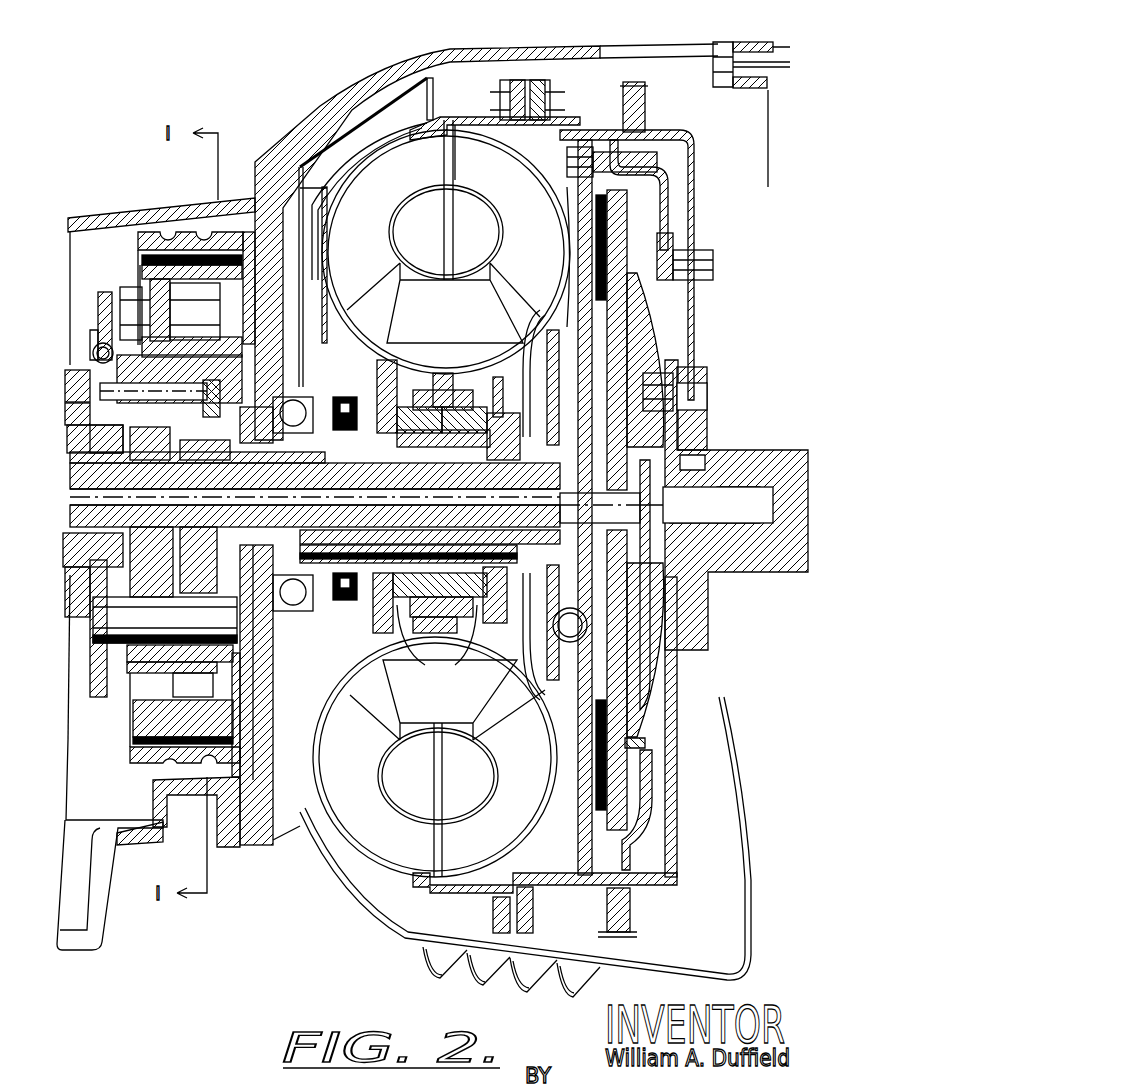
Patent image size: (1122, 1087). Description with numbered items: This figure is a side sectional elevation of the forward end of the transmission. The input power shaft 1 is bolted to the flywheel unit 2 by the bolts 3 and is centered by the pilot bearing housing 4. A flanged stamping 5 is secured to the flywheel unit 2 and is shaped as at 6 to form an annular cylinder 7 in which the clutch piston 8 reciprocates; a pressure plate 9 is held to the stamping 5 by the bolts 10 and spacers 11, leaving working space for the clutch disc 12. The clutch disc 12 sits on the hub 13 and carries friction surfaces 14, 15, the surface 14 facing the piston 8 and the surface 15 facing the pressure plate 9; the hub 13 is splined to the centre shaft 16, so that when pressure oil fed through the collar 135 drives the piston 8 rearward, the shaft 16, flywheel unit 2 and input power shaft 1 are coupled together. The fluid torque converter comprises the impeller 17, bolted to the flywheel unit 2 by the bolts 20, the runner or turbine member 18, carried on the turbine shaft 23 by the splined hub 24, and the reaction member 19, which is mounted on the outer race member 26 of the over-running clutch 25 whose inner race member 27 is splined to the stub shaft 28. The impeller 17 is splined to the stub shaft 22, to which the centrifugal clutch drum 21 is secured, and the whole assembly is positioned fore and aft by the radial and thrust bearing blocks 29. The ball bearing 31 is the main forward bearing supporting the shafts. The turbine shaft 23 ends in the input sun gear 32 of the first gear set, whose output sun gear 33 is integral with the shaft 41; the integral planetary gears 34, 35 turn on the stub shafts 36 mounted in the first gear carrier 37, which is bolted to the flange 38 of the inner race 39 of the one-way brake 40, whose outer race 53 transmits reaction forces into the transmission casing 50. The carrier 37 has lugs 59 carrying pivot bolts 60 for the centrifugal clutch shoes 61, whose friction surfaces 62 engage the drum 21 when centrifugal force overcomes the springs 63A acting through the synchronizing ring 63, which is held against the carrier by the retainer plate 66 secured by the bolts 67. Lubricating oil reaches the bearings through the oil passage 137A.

The input power shaft 1 is at (740, 456).
The flywheel unit 2 is at (702, 150).
The bolts 3 is at (700, 268).
The pilot bearing housing 4 is at (687, 470).
The flanged stamping 5 is at (642, 805).
The shaped portion of stamping 6 is at (632, 747).
The annular cylinder 7 is at (635, 700).
The clutch piston 8 is at (630, 290).
The pressure plate 9 is at (587, 187).
The bolts 10 is at (637, 160).
The spacers 11 is at (620, 143).
The clutch disc 12 is at (592, 358).
The hub 13 is at (670, 420).
The friction surface 14 is at (612, 243).
The friction surface 15 is at (606, 223).
The centre shaft 16 is at (503, 447).
The impeller 17 is at (375, 193).
The runner or turbine member 18 is at (485, 165).
The reaction member 19 is at (455, 298).
The bolts 20 is at (535, 82).
The centrifugal clutch drum 21 is at (196, 258).
The stub shaft 22 is at (262, 425).
The turbine shaft 23 is at (360, 468).
The splined hub 24 is at (587, 563).
The over-running clutch 25 is at (432, 410).
The outer race member 26 is at (447, 392).
The inner race member 27 is at (470, 420).
The stub shaft 28 is at (335, 452).
The radial and thrust bearing blocks 29 is at (447, 714).
The ball bearing 31 is at (295, 400).
The input sun gear 32 is at (200, 447).
The output sun gear 33 is at (150, 437).
The planetary gears 34 is at (183, 711).
The planetary gears 35 is at (140, 660).
The stub shafts 36 is at (165, 620).
The first gear carrier 37 is at (212, 420).
The flange 38 is at (123, 423).
The inner race 39 is at (85, 440).
The one-way brake 40 is at (80, 410).
The shaft 41 is at (100, 531).
The transmission casing 50 is at (118, 220).
The outer race 53 is at (80, 383).
The lugs 59 is at (155, 290).
The pivot bolts 60 is at (140, 260).
The centrifugal clutch shoes 61 is at (210, 275).
The friction surfaces 62 is at (160, 250).
The synchronizing ring 63 is at (105, 318).
The springs 63A is at (100, 340).
The retainer plate 66 is at (95, 353).
The bolts 67 is at (160, 395).
The collar 135 is at (600, 508).
The oil passage 137A is at (80, 478).